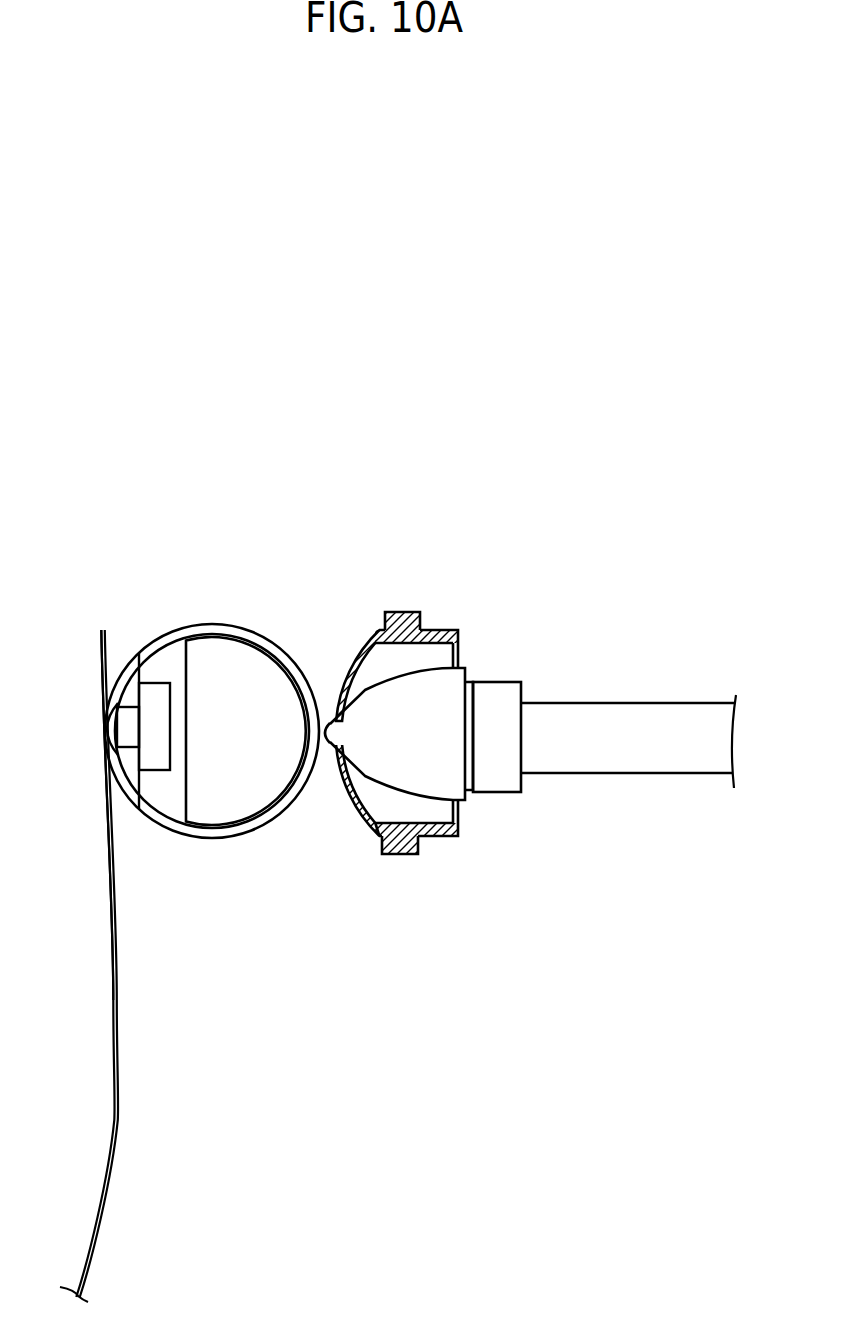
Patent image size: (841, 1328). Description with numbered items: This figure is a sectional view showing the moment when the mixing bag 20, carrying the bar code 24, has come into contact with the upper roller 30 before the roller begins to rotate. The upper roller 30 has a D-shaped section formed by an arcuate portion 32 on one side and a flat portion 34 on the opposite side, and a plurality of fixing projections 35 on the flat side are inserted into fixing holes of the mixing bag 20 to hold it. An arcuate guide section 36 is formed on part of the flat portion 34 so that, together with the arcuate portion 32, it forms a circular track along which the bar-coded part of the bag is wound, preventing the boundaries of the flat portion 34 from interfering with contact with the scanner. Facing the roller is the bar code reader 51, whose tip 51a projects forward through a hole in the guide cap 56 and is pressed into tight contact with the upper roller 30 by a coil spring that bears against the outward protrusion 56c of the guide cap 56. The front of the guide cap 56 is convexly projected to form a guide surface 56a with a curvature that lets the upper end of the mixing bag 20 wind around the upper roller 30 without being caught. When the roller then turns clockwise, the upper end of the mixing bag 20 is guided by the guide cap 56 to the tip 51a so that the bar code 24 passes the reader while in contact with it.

The mixing bag 20 is at (110, 975).
The bar code 24 is at (100, 852).
The upper roller 30 is at (205, 846).
The arcuate portion 32 is at (228, 628).
The flat portion 34 is at (120, 676).
The fixing projections 35 is at (110, 727).
The arcuate guide section 36 is at (120, 763).
The bar code reader 51 is at (627, 757).
The tip 51a is at (333, 757).
The guide cap 56 is at (445, 836).
The guide surface 56a is at (343, 683).
The outward protrusion 56c is at (403, 612).